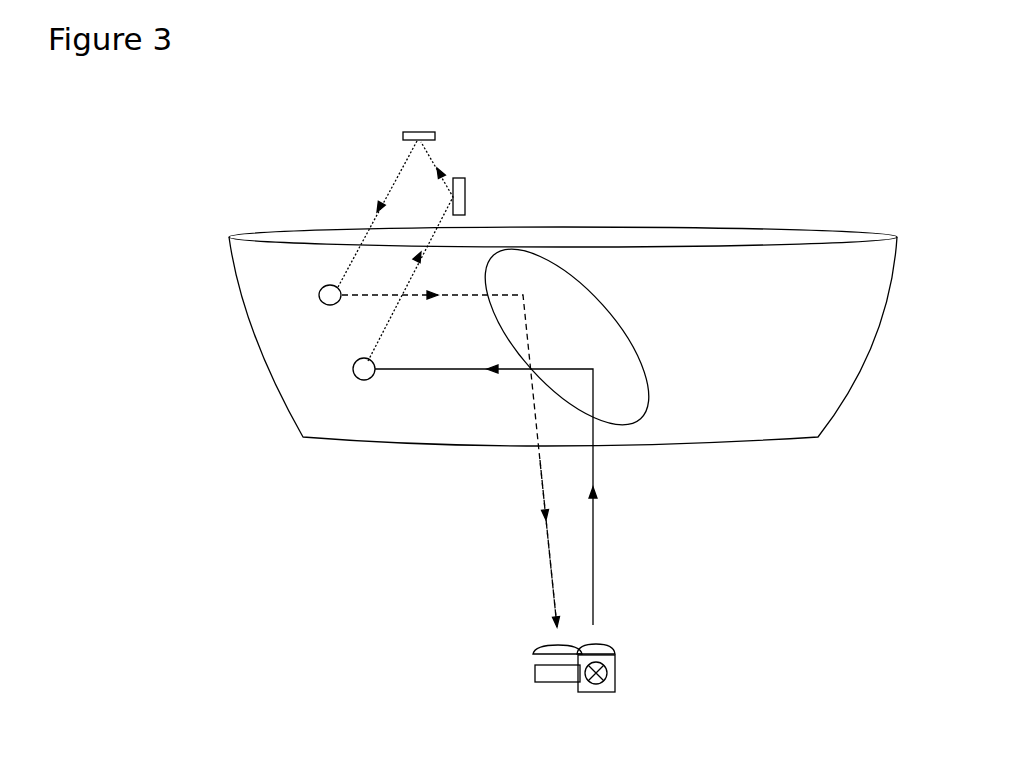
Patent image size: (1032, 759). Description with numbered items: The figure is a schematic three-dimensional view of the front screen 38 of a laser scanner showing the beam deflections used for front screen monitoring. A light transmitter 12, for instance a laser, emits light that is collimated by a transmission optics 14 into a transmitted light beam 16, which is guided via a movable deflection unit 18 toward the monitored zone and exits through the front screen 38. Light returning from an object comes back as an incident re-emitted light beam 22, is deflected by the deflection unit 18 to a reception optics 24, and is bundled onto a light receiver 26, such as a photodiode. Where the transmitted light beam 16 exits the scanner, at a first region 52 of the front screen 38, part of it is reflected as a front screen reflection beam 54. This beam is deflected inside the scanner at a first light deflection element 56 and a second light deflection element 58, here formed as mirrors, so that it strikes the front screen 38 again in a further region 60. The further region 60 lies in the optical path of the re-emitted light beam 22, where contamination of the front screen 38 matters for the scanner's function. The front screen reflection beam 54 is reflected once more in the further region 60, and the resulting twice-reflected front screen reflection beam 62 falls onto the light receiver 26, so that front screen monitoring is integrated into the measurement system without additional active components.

The light transmitter 12 is at (616, 678).
The transmission optics 14 is at (608, 643).
The transmitted light beam 16 is at (595, 540).
The movable deflection unit 18 is at (590, 321).
The incident re-emitted light beam 22 is at (538, 482).
The reception optics 24 is at (548, 647).
The light receiver 26 is at (545, 676).
The front screen 38 is at (830, 273).
The first region 52 is at (358, 380).
The front screen reflection beam 54 is at (392, 314).
The first light deflection element 56 is at (466, 197).
The second light deflection element 58 is at (425, 131).
The further region 60 is at (326, 288).
The twice-reflected front screen reflection beam 62 is at (455, 300).